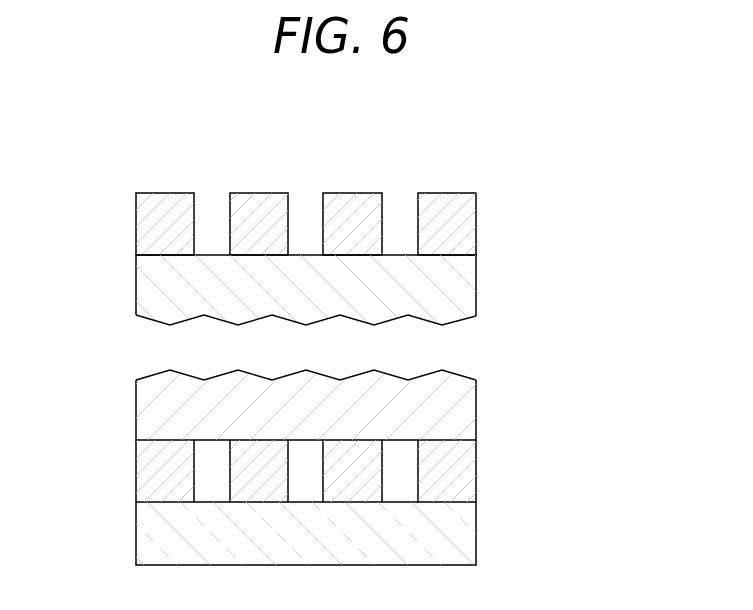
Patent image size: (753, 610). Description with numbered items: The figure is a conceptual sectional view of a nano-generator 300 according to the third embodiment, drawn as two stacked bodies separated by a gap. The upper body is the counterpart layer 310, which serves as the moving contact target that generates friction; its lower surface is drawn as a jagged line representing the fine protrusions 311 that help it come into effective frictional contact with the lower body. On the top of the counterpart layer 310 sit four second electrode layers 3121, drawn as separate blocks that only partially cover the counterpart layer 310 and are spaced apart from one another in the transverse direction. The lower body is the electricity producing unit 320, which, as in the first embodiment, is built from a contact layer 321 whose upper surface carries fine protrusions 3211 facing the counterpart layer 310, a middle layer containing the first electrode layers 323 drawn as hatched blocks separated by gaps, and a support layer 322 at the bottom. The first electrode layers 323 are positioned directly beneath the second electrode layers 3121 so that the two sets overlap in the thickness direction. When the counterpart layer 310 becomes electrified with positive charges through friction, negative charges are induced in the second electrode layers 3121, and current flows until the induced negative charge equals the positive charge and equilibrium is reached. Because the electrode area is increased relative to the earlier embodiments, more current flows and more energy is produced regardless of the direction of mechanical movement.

The nano-generator 300 is at (124, 153).
The counterpart layer 310 is at (337, 299).
The uneven surface of first substrate 311 is at (460, 322).
The second electrode layers 3121 is at (473, 222).
The second member 320 is at (304, 458).
The upper layer 321 is at (311, 395).
The uneven surface of upper layer 3211 is at (151, 377).
The base layer 322 is at (472, 537).
The first electrode layers 323 is at (472, 468).